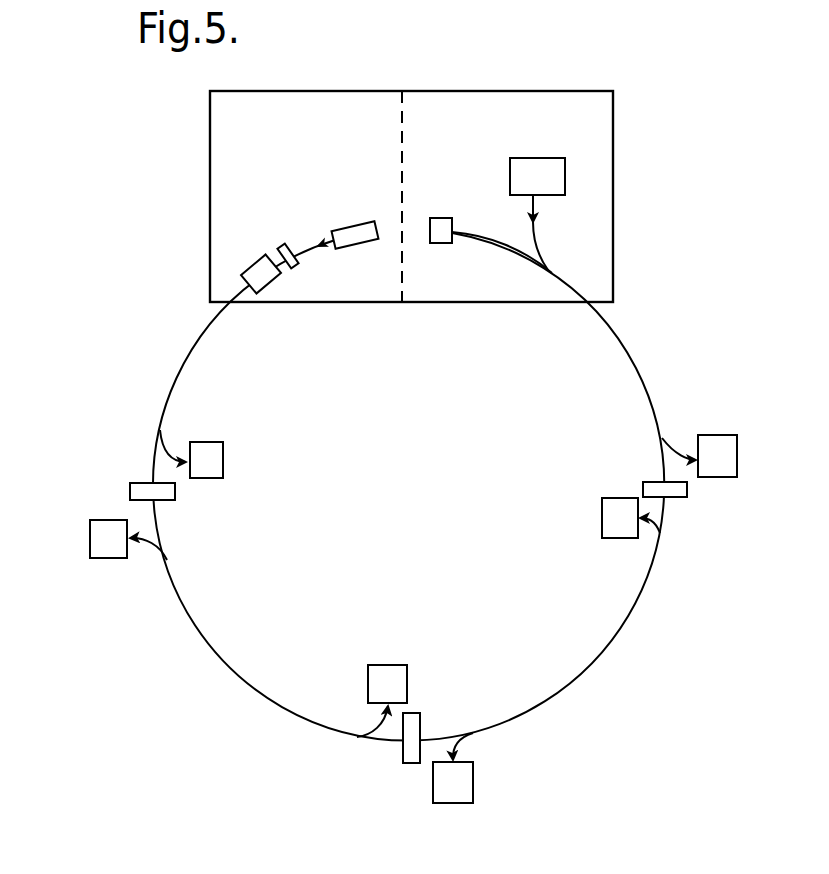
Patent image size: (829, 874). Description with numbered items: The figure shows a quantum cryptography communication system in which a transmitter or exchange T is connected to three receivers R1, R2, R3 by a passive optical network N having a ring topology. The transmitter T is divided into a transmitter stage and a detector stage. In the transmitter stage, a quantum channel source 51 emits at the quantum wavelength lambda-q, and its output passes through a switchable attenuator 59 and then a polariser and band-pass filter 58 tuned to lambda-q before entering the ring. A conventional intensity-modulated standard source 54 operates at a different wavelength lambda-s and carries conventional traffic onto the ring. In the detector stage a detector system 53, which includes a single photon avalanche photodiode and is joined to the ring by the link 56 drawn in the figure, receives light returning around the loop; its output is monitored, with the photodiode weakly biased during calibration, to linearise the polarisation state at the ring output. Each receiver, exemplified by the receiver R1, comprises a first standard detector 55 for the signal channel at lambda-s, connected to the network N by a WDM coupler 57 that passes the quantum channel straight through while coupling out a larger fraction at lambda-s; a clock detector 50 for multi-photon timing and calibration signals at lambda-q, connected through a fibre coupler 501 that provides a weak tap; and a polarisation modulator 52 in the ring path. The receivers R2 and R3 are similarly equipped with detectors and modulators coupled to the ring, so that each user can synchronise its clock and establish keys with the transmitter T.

The clock detector 50 is at (224, 462).
The fibre coupler 501 is at (160, 430).
The quantum channel source 51 is at (358, 223).
The modulator 52 is at (146, 482).
The detector system 53 is at (438, 222).
The standard source 54 is at (542, 168).
The first standard detector 55 is at (92, 528).
The fibre link from detector 53 to network 56 is at (550, 273).
The WDM coupler 57 is at (167, 560).
The polariser and band-pass filter 58 is at (255, 262).
The switchable attenuator 59 is at (297, 268).
The transmitter or exchange T is at (609, 125).
The passive optical network N is at (597, 661).
The receiver R1 is at (110, 565).
The receiver R2 is at (445, 810).
The receiver R3 is at (720, 484).